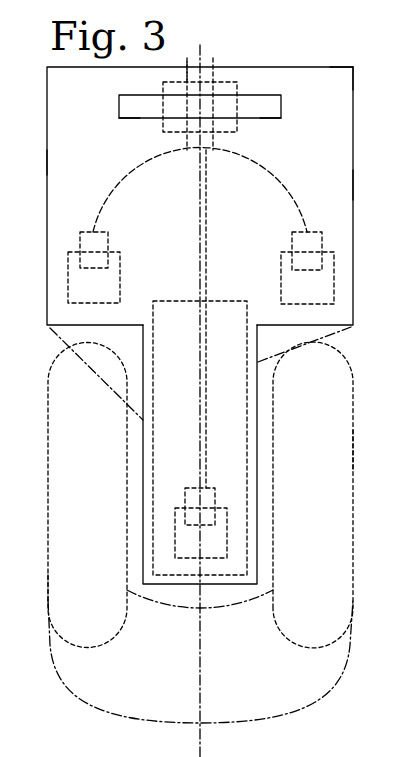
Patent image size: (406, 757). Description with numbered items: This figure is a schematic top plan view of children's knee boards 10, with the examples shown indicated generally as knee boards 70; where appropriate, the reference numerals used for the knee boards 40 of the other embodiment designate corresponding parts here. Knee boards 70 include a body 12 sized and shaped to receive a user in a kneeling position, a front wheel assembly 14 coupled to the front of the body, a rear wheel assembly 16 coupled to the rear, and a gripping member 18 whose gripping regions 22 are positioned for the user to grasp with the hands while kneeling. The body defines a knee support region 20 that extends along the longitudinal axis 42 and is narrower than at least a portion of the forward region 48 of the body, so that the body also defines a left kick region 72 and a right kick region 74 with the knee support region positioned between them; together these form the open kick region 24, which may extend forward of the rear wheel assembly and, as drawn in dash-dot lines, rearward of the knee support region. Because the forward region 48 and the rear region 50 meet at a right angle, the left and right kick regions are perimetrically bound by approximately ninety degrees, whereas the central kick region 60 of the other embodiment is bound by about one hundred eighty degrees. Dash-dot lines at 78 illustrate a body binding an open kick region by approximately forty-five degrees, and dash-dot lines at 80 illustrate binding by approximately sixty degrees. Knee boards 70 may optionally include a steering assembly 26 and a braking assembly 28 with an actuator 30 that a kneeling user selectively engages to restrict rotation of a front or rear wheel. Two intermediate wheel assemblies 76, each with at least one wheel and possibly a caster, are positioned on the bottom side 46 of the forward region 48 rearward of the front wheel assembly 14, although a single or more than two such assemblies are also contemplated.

The knee board 10 is at (351, 18).
The body 12 is at (353, 140).
The front wheel assembly 14 is at (228, 82).
The rear wheel assembly 16 is at (175, 520).
The gripping member 18 is at (281, 95).
The knee support region 20 is at (222, 301).
The gripping regions 22 is at (130, 118).
The open kick region 24 is at (354, 377).
The steering assembly 26 is at (239, 52).
The braking assembly 28 is at (189, 57).
The actuator 30 is at (185, 148).
The knee boards 40 is at (327, 755).
The longitudinal axis 42 is at (193, 752).
The bottom side 46 is at (47, 160).
The forward region 48 is at (354, 182).
The rear region 50 is at (259, 519).
The central kick region 60 is at (2, 512).
The knee boards 70 is at (353, 64).
The left kick region 72 is at (48, 589).
The right kick region 74 is at (354, 445).
The intermediate wheel assemblies 76 is at (120, 285).
The dash-dot lines (45-degree bound) 78 is at (96, 378).
The dash-dot lines (60-degree bound) 80 is at (322, 345).